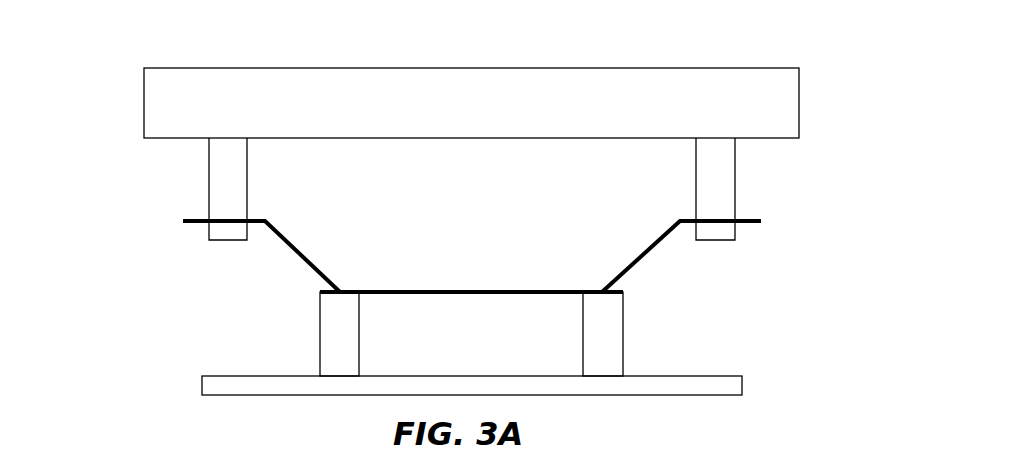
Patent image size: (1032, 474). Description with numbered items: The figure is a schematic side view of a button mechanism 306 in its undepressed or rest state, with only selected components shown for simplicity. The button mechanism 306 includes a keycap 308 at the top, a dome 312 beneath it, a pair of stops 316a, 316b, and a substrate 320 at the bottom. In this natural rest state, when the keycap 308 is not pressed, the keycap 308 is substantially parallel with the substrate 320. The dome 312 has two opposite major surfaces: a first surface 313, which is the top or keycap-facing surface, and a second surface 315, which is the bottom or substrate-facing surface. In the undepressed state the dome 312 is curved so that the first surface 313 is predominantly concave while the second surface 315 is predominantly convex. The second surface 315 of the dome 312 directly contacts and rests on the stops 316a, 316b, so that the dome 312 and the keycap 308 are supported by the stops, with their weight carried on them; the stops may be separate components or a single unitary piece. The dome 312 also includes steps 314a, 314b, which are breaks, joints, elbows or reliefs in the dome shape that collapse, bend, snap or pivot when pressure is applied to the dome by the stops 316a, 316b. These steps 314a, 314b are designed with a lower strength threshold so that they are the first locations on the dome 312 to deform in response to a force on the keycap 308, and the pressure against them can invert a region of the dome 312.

The button mechanism 306 is at (157, 48).
The keycap 308 is at (799, 103).
The dome 312 is at (663, 232).
The first surface 313 is at (470, 291).
The step 314a is at (598, 290).
The step 314b is at (341, 290).
The second surface 315 is at (405, 294).
The stop 316a is at (623, 334).
The stop 316b is at (320, 336).
The substrate 320 is at (228, 396).